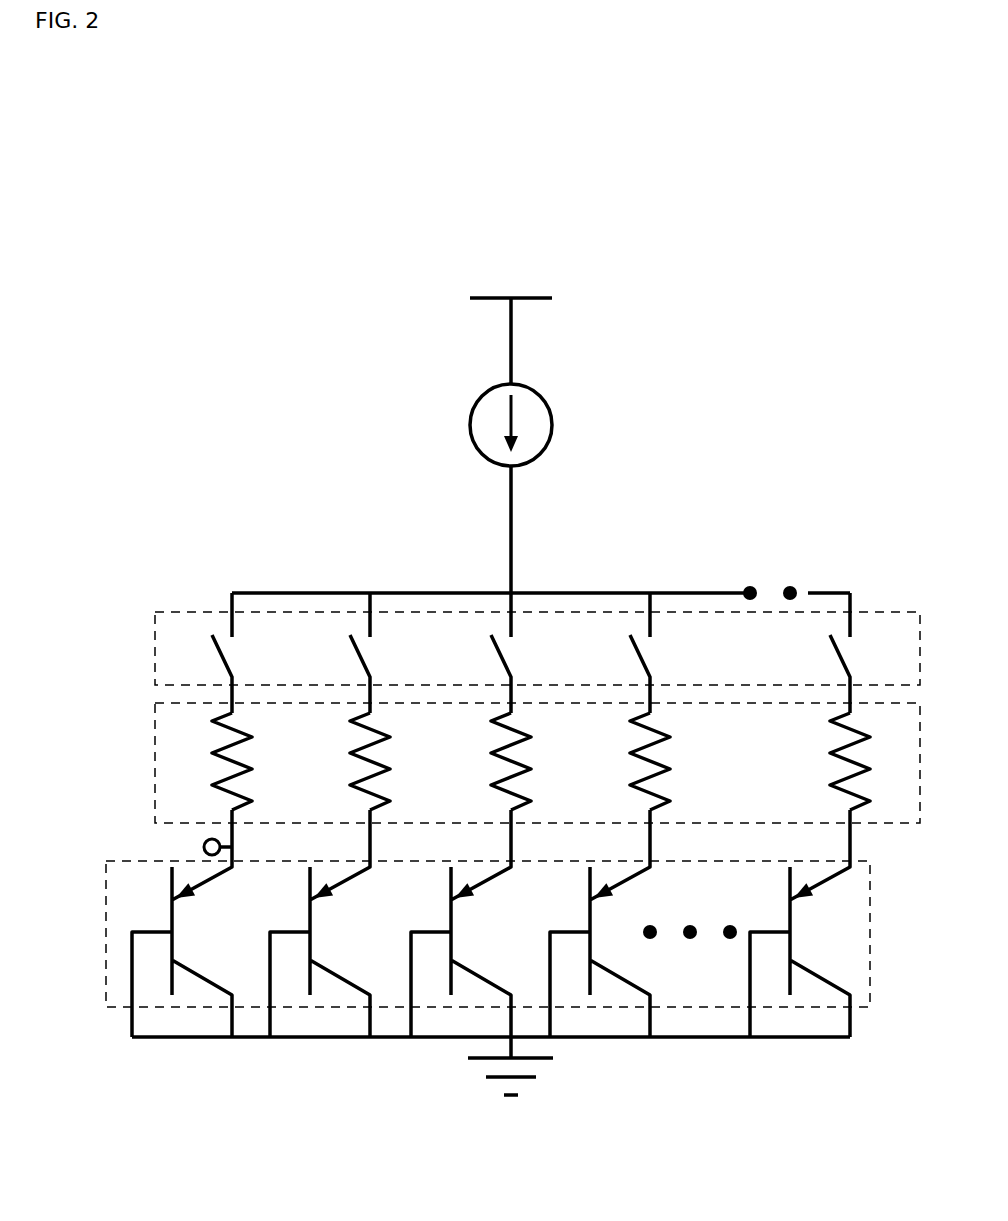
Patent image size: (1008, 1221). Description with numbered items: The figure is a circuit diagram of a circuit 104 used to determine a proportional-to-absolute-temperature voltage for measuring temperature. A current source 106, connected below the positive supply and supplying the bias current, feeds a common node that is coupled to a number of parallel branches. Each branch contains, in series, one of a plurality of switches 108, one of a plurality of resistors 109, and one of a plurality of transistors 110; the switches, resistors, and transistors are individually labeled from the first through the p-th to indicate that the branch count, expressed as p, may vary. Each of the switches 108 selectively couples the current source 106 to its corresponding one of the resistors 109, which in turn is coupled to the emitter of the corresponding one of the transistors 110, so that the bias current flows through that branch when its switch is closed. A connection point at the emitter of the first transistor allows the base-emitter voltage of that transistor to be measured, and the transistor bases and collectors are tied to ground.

The circuit 104 is at (150, 404).
The current source 106 is at (474, 400).
The plurality of switches 108 is at (155, 620).
The plurality of resistors 109 is at (155, 750).
The plurality of transistors 110 is at (107, 925).